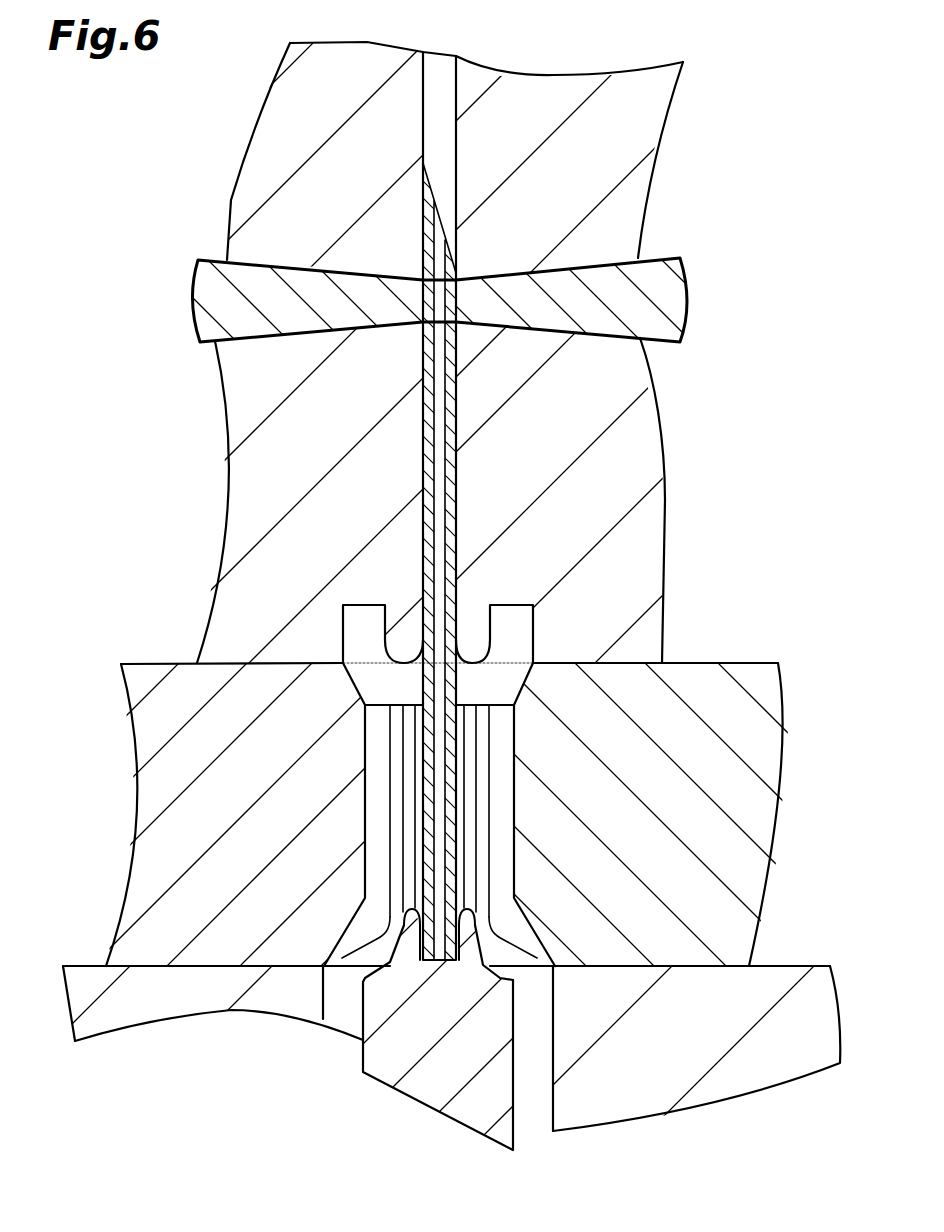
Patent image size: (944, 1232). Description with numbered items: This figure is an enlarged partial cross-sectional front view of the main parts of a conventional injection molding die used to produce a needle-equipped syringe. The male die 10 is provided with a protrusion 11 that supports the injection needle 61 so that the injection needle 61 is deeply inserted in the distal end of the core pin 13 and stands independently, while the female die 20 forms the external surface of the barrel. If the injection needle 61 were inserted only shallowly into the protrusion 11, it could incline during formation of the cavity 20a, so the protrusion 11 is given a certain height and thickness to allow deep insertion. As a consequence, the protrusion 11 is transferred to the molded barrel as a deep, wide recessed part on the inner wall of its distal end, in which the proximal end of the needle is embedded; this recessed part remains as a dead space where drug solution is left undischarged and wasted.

The female die 20 is at (222, 489).
The cavity 20a is at (527, 1100).
The injection needle 61 is at (420, 557).
The protrusion 11 is at (413, 917).
The core pin 13 is at (397, 983).
The male die 10 is at (416, 1108).